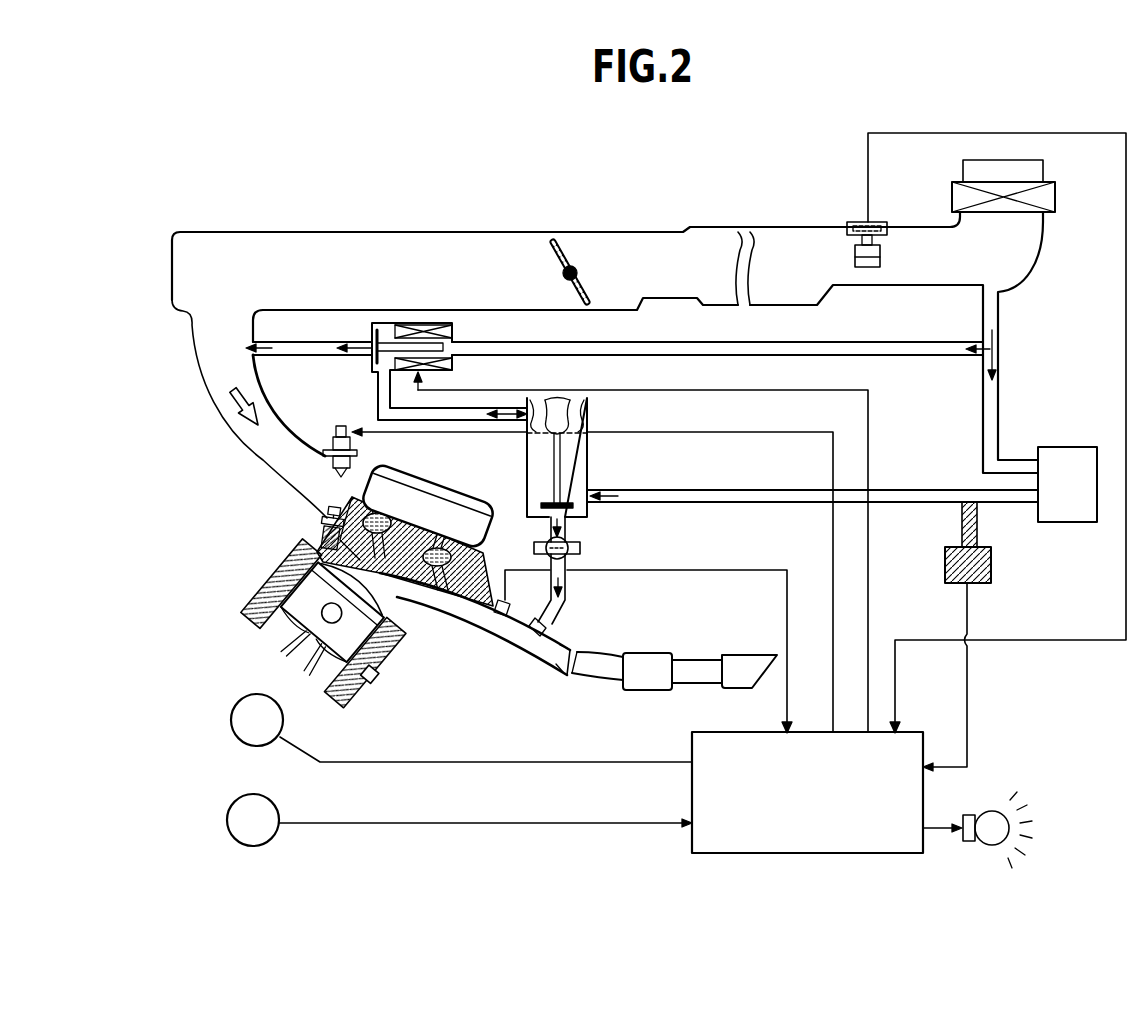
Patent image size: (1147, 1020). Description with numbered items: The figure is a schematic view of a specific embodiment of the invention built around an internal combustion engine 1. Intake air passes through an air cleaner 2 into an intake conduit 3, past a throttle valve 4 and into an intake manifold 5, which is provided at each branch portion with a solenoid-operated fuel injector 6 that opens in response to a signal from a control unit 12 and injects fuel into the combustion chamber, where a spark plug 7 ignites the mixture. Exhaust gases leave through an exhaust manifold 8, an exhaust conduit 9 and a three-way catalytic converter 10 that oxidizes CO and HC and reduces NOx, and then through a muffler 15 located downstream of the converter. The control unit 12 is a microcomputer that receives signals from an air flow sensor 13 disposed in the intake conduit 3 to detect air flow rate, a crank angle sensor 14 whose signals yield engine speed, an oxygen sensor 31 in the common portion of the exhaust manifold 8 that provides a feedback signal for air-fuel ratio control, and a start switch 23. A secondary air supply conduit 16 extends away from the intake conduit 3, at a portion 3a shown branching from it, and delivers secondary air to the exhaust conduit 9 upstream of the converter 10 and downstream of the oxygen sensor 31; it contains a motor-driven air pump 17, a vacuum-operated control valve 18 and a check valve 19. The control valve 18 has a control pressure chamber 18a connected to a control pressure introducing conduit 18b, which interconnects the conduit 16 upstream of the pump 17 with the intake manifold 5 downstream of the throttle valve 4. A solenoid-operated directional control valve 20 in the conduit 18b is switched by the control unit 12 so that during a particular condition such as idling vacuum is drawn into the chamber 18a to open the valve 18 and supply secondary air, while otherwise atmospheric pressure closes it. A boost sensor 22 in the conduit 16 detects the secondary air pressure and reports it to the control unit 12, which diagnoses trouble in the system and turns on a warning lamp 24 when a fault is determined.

The internal combustion engine 1 is at (498, 559).
The air cleaner 2 is at (952, 197).
The intake conduit 3 is at (776, 225).
The branch air passage 3a is at (1005, 290).
The throttle valve 4 is at (575, 262).
The intake manifold 5 is at (200, 366).
The fuel injector 6 is at (336, 436).
The spark plug 7 is at (321, 530).
The exhaust manifold 8 is at (472, 622).
The exhaust conduit 9 is at (598, 682).
The three-way catalytic converter 10 is at (648, 652).
The control unit 12 is at (700, 747).
The air flow sensor 13 is at (850, 220).
The crank angle sensor 14 is at (231, 727).
The muffler 15 is at (745, 658).
The secondary air supply conduit 16 is at (703, 505).
The motor-driven air pump 17 is at (1067, 455).
The vacuum-operated control valve 18 is at (587, 462).
The control pressure chamber 18a is at (587, 420).
The control pressure introducing conduit 18b is at (292, 354).
The check valve 19 is at (580, 546).
The solenoid-operated directional control valve 20 is at (455, 336).
The boost sensor 22 is at (993, 565).
The start switch 23 is at (228, 832).
The warning lamp 24 is at (985, 815).
The oxygen sensor 31 is at (499, 620).